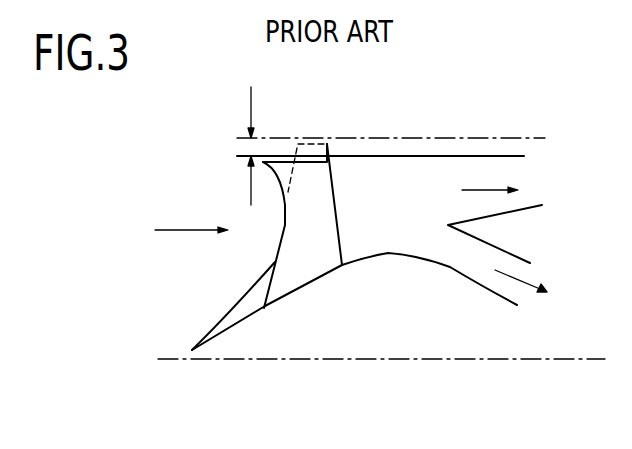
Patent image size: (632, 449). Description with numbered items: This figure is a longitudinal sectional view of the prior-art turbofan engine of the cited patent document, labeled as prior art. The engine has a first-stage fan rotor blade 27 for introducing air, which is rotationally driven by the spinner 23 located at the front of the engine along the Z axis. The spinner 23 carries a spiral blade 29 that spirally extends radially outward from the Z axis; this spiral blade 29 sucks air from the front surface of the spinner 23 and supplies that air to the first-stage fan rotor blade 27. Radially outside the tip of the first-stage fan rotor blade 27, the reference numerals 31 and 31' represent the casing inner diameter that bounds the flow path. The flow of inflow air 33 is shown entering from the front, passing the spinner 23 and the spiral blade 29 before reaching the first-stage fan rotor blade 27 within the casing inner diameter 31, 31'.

The spinner 23 is at (285, 340).
The first-stage fan rotor blade 27 is at (310, 230).
The spiral blade 29 is at (243, 308).
The casing inner diameter 31 is at (391, 116).
The casing inner diameter 31' is at (397, 122).
The flow of inflow air 33 is at (188, 230).